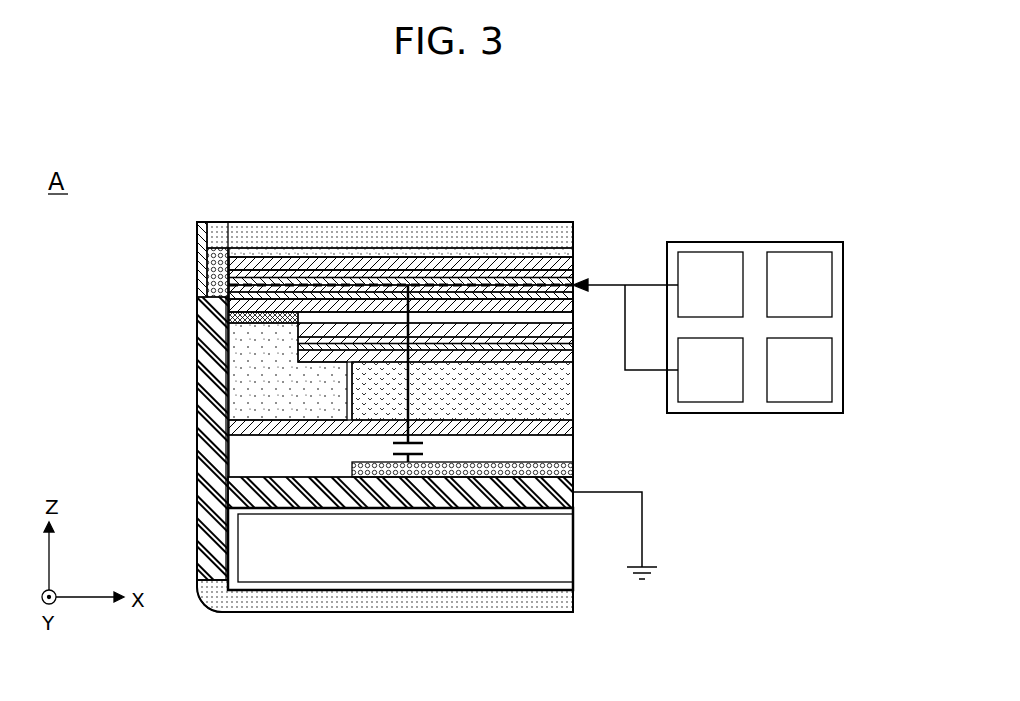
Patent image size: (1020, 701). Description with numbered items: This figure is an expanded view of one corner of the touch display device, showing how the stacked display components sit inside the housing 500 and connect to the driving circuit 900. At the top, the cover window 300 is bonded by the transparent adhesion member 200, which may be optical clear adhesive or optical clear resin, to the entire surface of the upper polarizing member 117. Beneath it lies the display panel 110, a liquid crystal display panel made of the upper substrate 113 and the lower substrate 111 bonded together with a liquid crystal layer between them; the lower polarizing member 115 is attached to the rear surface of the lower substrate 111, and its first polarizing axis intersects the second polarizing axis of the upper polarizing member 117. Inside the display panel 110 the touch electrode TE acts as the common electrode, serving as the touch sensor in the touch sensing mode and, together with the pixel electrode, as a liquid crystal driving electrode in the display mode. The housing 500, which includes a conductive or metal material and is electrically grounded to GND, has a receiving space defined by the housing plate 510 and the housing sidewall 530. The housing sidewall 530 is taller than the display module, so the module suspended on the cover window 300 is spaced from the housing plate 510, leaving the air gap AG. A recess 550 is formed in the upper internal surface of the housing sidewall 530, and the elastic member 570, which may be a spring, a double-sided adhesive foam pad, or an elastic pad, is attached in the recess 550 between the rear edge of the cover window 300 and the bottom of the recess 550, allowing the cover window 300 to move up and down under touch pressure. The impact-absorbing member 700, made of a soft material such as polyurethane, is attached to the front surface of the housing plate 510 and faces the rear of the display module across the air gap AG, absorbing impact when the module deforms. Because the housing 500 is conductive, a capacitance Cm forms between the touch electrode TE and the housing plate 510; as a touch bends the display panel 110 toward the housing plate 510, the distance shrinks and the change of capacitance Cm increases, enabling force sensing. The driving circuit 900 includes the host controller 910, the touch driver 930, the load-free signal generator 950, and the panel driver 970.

The cover window 300 is at (237, 228).
The transparent adhesion member 200 is at (293, 257).
The touch electrode TE is at (352, 278).
The display panel 110 is at (555, 168).
The upper polarizing member 117 is at (435, 262).
The upper substrate 113 is at (470, 275).
The lower substrate 111 is at (508, 291).
The lower polarizing member 115 is at (548, 305).
The driving circuit 900 is at (735, 294).
The touch driver 930 is at (728, 297).
The host controller 910 is at (817, 297).
The panel driver 970 is at (728, 383).
The load-free signal generator 950 is at (817, 383).
The housing 500 is at (106, 508).
The elastic member 570 is at (215, 262).
The recess 550 is at (205, 297).
The housing sidewall 530 is at (210, 443).
The housing plate 510 is at (266, 488).
The air gap AG is at (316, 452).
The impact-absorbing member 700 is at (370, 478).
The capacitance Cm is at (425, 373).
The ground GND is at (640, 540).